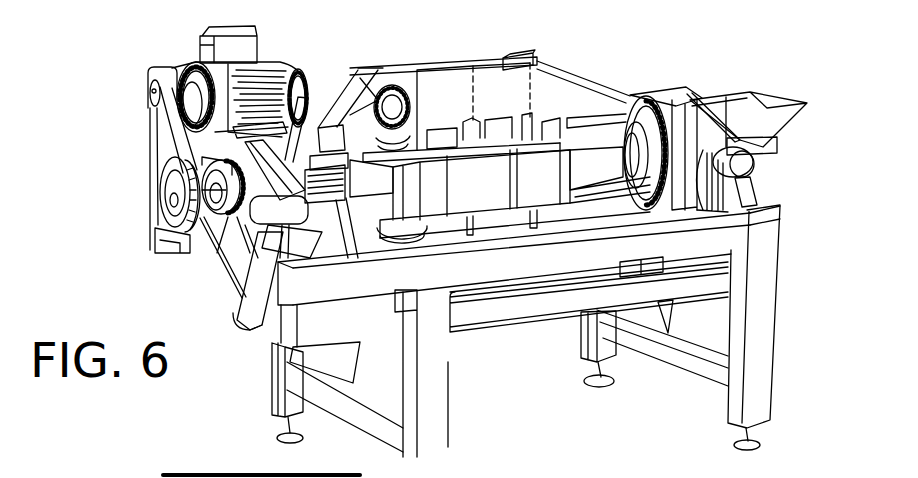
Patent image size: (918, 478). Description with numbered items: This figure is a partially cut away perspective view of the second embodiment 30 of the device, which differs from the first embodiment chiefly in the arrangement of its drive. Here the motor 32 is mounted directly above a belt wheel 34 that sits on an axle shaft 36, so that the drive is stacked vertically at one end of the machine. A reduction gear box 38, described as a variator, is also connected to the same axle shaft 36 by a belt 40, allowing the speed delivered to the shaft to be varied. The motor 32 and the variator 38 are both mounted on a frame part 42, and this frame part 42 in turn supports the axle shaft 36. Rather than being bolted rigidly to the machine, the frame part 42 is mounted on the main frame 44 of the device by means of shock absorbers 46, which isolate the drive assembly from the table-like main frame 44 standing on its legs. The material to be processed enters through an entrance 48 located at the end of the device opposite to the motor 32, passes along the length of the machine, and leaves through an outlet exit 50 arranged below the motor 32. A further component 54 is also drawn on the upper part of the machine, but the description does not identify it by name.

The second embodiment of the device 30 is at (678, 88).
The motor 32 is at (175, 67).
The belt wheel 34 is at (161, 218).
The axle shaft 36 is at (205, 250).
The reduction gear box 38 is at (274, 63).
The belt 40 is at (334, 85).
The frame part 42 is at (221, 273).
The main frame 44 is at (397, 267).
The shock absorbers 46 is at (243, 327).
The entrance 48 is at (765, 97).
The outlet exit 50 is at (253, 353).
The housing 54 is at (479, 50).